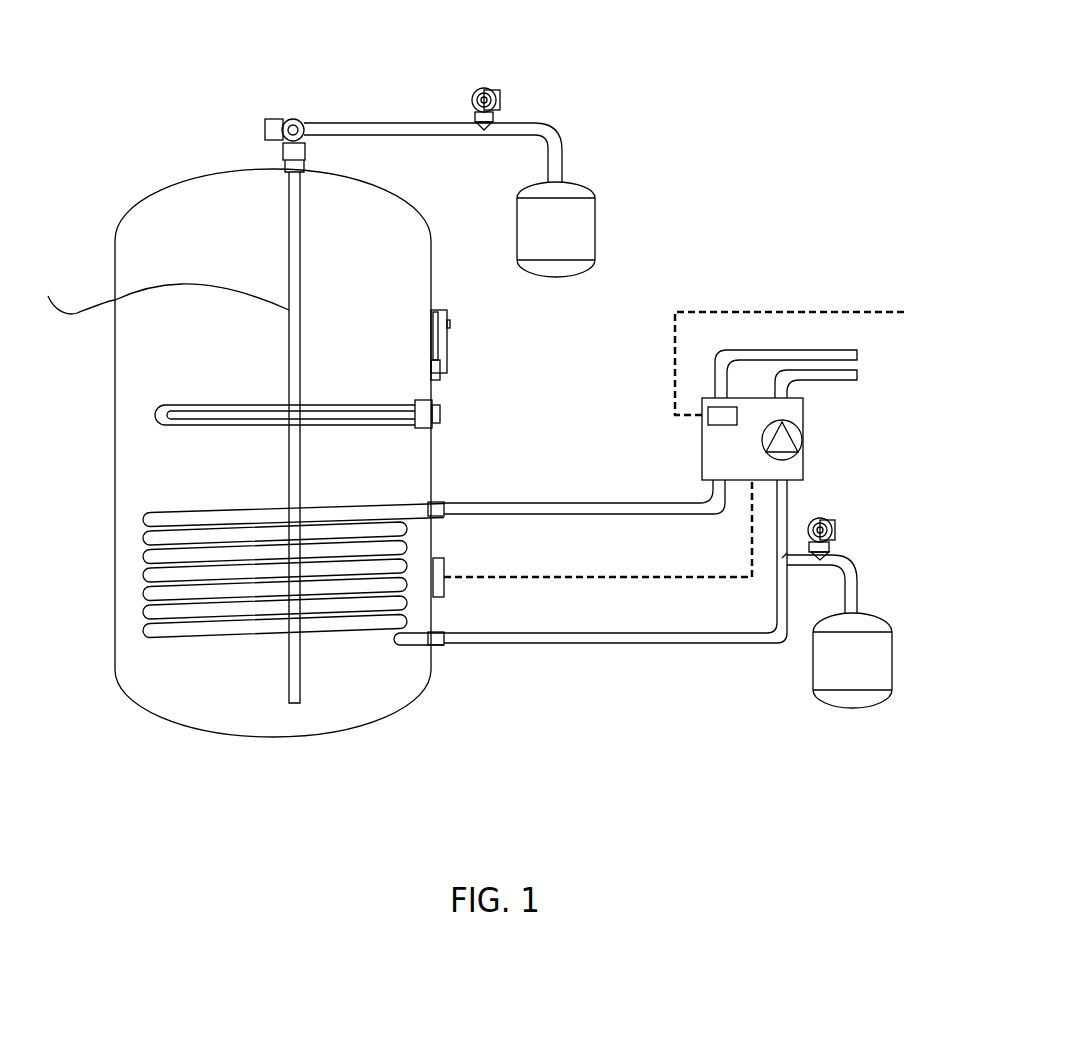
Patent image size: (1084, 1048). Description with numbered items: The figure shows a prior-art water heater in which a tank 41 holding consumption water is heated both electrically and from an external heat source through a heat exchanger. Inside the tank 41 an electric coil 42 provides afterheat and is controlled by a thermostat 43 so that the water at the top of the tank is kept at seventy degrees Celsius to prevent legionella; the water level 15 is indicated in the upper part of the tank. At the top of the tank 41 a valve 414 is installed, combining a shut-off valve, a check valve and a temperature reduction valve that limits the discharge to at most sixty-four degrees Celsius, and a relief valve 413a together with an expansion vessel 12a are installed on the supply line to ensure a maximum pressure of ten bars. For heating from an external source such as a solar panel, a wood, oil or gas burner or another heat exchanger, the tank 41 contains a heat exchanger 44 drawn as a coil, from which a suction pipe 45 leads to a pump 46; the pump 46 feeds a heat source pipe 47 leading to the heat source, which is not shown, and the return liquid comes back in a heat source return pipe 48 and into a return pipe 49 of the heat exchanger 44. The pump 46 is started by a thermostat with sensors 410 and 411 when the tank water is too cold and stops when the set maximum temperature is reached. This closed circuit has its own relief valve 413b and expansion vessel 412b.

The water level 15 is at (165, 293).
The tank 41 is at (116, 455).
The electric coil 42 is at (153, 414).
The thermostat 43 is at (446, 348).
The heat exchanger 44 is at (145, 543).
The suction pipe 45 is at (444, 648).
The pump 46 is at (804, 438).
The heat source pipe 47 is at (858, 372).
The heat source return pipe 48 is at (852, 351).
The return pipe 49 is at (433, 503).
The sensor 410 is at (445, 590).
The sensor 411 is at (835, 312).
The expansion vessel 412b is at (857, 628).
The relief valve 413a is at (488, 88).
The relief valve 413b is at (831, 522).
The valve 414 is at (292, 119).
The expansion vessel 12a is at (574, 221).